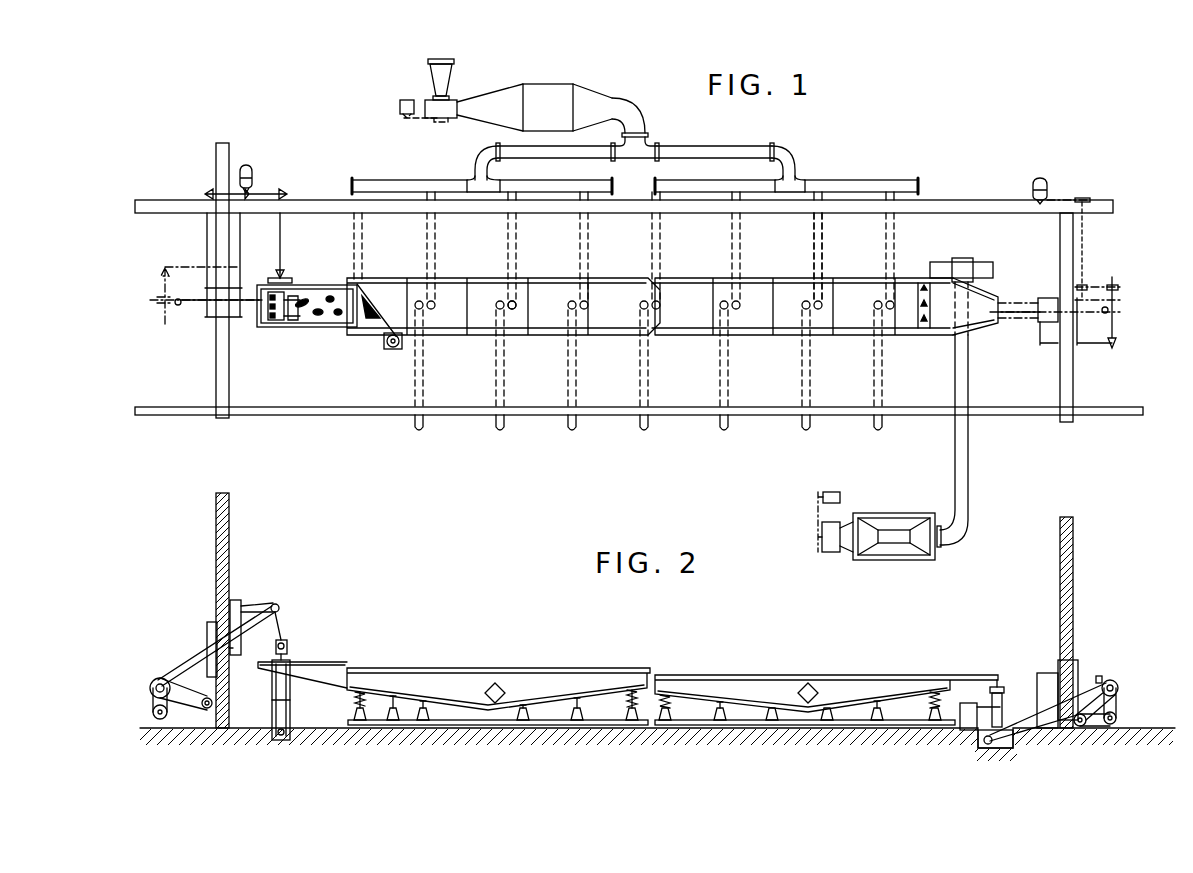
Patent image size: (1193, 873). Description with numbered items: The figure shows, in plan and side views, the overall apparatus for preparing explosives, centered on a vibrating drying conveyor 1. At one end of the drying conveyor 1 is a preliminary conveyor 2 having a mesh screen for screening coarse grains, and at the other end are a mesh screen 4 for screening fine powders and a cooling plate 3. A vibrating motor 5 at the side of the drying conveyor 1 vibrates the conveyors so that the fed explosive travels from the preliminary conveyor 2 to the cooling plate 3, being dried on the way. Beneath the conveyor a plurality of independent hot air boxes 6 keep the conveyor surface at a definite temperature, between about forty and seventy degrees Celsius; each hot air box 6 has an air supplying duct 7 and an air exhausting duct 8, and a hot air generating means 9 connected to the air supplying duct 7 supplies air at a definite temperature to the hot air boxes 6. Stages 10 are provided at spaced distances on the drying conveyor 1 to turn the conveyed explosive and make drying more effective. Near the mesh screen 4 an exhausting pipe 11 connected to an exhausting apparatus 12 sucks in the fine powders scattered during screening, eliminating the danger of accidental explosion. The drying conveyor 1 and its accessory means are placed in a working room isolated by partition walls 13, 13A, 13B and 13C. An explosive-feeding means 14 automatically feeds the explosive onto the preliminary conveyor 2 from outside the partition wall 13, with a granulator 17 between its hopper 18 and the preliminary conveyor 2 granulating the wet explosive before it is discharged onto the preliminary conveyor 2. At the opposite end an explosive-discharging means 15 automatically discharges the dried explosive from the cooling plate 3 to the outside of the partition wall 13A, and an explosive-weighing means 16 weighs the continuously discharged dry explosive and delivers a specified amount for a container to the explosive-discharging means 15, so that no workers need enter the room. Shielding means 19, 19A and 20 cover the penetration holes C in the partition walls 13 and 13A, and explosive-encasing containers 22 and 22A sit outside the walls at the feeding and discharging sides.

In FIG. 1, the vibrating drying conveyor 1 is at (457, 322).
In FIG. 2, the vibrating drying conveyor 1 is at (553, 668).
In FIG. 1, the preliminary conveyor 2 is at (328, 322).
In FIG. 2, the preliminary conveyor 2 is at (330, 670).
In FIG. 1, the cooling plate 3 is at (985, 324).
In FIG. 2, the cooling plate 3 is at (968, 676).
In FIG. 1, the mesh screen 4 is at (924, 328).
In FIG. 2, the vibrating motor 5 is at (500, 688).
In FIG. 1, the hot air box 6 is at (507, 300).
In FIG. 1, the air supplying duct 7 is at (822, 247).
In FIG. 1, the air exhausting duct 8 is at (808, 364).
In FIG. 1, the hot air generating means 9 is at (565, 105).
In FIG. 1, the stage 10 is at (528, 313).
In FIG. 1, the exhausting pipe 11 is at (965, 272).
In FIG. 1, the exhausting apparatus 12 is at (900, 540).
In FIG. 1, the partition wall 13 is at (229, 388).
In FIG. 2, the partition wall 13 is at (222, 512).
In FIG. 1, the partition wall 13A is at (1073, 385).
In FIG. 2, the partition wall 13A is at (1073, 562).
In FIG. 1, the partition wall 13B is at (990, 208).
In FIG. 1, the partition wall 13C is at (1020, 415).
In FIG. 1, the explosive-feeding means 14 is at (205, 310).
In FIG. 2, the explosive-feeding means 14 is at (168, 684).
In FIG. 1, the explosive-discharging means 15 is at (1108, 332).
In FIG. 2, the explosive-discharging means 15 is at (1118, 690).
In FIG. 2, the explosive-weighing means 16 is at (977, 740).
In FIG. 2, the granulator 17 is at (290, 652).
In FIG. 2, the hopper 18 is at (284, 632).
In FIG. 2, the shielding means 19 is at (210, 630).
In FIG. 2, the shielding means 19A is at (240, 605).
In FIG. 2, the shielding means 20 is at (1077, 668).
In FIG. 1, the explosive-encasing container 22 is at (160, 312).
In FIG. 1, the explosive-encasing container 22A is at (1102, 302).
In FIG. 2, the explosive-encasing container 22A is at (1102, 679).
In FIG. 2, the penetration hole C is at (232, 650).